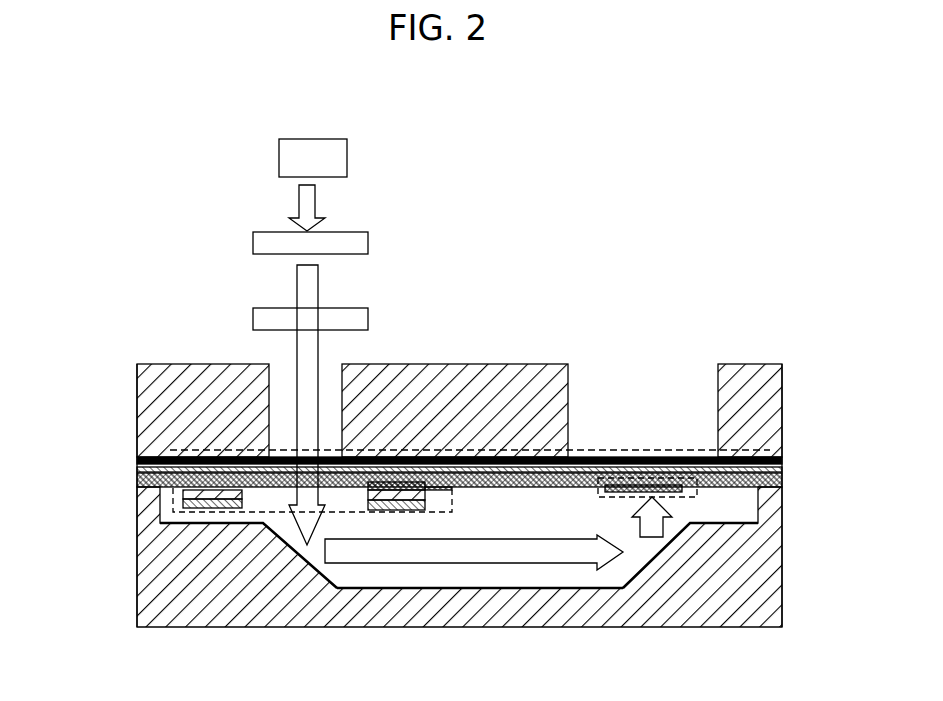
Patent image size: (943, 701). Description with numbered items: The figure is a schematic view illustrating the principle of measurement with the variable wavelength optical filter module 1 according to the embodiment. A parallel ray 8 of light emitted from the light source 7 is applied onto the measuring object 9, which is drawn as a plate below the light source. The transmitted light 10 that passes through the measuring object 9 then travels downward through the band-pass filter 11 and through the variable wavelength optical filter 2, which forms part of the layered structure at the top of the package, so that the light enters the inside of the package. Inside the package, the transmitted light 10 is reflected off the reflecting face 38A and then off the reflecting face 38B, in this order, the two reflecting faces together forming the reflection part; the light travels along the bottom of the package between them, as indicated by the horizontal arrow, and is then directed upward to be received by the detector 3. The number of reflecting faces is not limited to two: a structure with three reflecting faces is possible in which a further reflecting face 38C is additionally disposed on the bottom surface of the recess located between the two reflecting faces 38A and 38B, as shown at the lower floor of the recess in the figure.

The chemical sensor / flow cell device 1 is at (113, 377).
The variable wavelength optical filter 2 is at (172, 508).
The detector 3 is at (695, 485).
The light source 7 is at (335, 161).
The parallel ray 8 is at (310, 207).
The measuring object 9 is at (350, 247).
The transmitted light 10 is at (310, 292).
The band-pass filter 11 is at (353, 320).
The reflecting face 38A is at (292, 549).
The reflecting face 38B is at (657, 555).
The reflecting face 38C is at (467, 587).